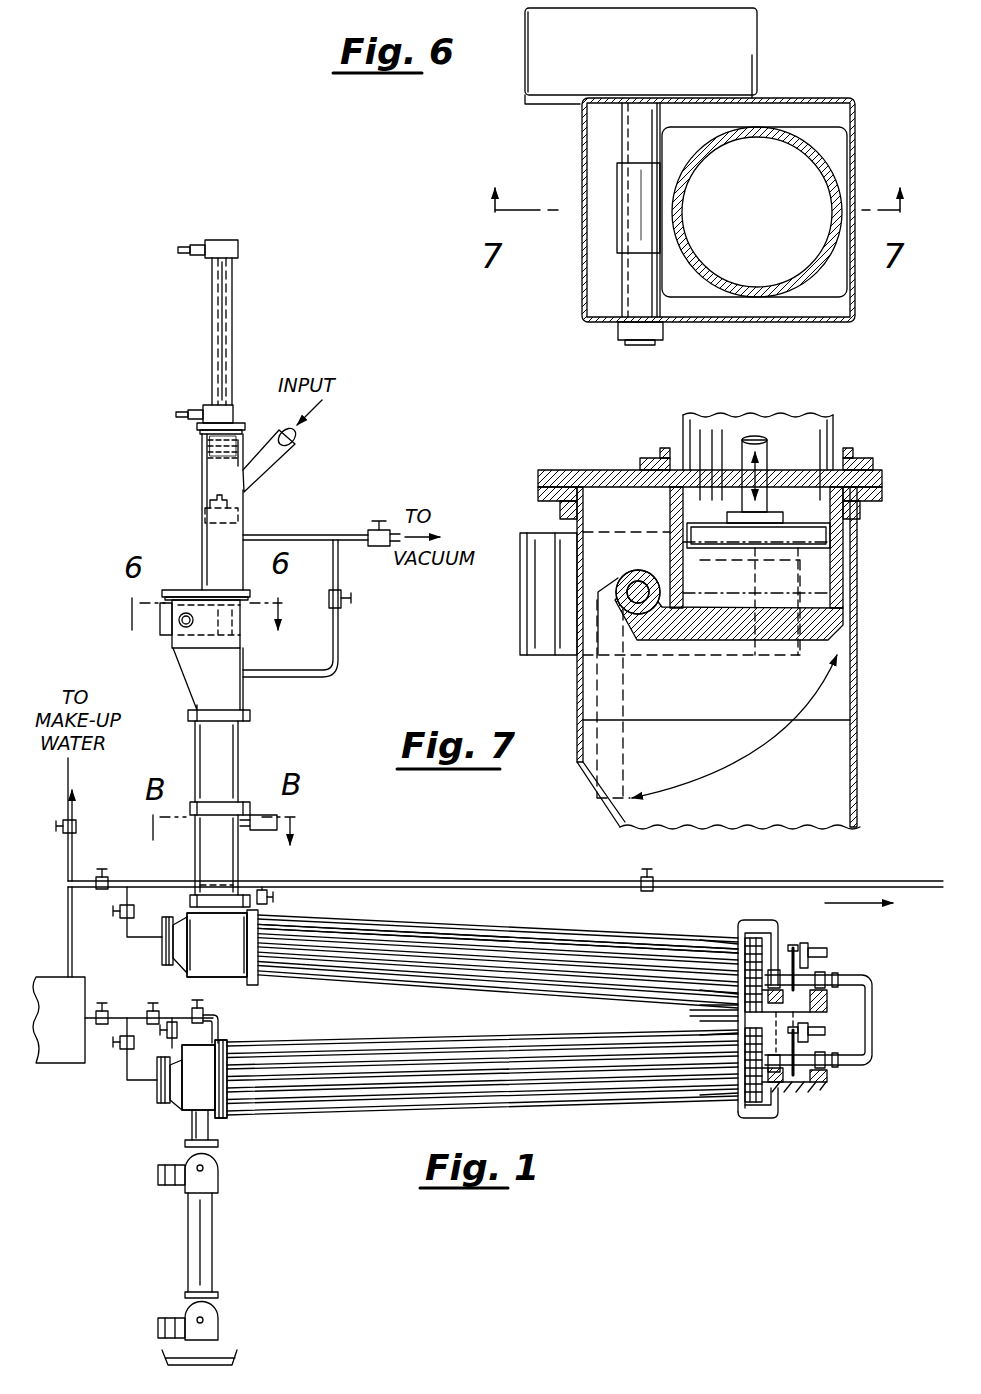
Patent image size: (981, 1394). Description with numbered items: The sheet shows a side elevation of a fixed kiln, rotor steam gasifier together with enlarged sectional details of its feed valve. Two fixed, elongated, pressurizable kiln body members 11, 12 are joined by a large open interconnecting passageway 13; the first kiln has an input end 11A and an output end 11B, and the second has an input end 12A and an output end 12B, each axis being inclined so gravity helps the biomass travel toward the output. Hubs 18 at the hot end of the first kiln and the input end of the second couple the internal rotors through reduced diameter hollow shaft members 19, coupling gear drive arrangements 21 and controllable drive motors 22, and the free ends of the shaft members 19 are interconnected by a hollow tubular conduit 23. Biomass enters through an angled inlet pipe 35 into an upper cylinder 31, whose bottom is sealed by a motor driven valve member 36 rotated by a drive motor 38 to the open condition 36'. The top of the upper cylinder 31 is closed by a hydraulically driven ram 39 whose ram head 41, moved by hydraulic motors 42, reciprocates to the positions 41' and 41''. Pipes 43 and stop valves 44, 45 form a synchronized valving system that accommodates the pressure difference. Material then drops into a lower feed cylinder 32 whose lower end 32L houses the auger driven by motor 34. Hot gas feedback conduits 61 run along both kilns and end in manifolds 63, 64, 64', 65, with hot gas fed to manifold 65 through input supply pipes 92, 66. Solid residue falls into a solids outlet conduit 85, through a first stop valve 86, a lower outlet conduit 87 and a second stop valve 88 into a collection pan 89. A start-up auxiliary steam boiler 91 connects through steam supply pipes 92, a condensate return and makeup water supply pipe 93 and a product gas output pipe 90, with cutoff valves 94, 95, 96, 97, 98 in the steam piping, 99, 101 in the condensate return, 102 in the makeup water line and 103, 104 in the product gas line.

In FIG. 1, the kiln body member 11 is at (590, 935).
In FIG. 1, the input end 11A is at (235, 980).
In FIG. 1, the output end 11B is at (716, 962).
In FIG. 1, the kiln body member 12 is at (567, 1106).
In FIG. 1, the input end 12A is at (700, 1060).
In FIG. 1, the output end 12B is at (160, 1106).
In FIG. 1, the interconnecting passageway 13 is at (690, 1013).
In FIG. 1, the hub 18 is at (760, 970).
In FIG. 1, the reduced diameter hollow shaft member 19 is at (826, 976).
In FIG. 1, the coupling gear drive arrangement 21 is at (793, 948).
In FIG. 1, the controllable drive motor 22 is at (806, 943).
In FIG. 1, the hollow tubular conduit 23 is at (872, 1040).
In FIG. 7, the upper cylinder 31 is at (690, 432).
In FIG. 1, the upper cylinder 31 is at (202, 485).
In FIG. 1, the lower feed cylinder 32 is at (198, 755).
In FIG. 1, the lower end of lower cylinder 32L is at (195, 870).
In FIG. 1, the motor 34 is at (265, 815).
In FIG. 1, the angled inlet pipe 35 is at (291, 447).
In FIG. 6, the motor driven valve member 36 is at (599, 224).
In FIG. 7, the motor driven valve member 36 is at (729, 631).
In FIG. 7, the open condition of valve member 36' is at (710, 665).
In FIG. 6, the drive motor 38 is at (530, 99).
In FIG. 7, the drive motor 38 is at (645, 536).
In FIG. 1, the drive motor 38 is at (193, 640).
In FIG. 1, the hydraulically driven ram 39 is at (212, 345).
In FIG. 1, the ram head 41 is at (193, 453).
In FIG. 1, the ram head lower position 41' is at (247, 508).
In FIG. 7, the ram head lowermost position 41'' is at (770, 481).
In FIG. 1, the hydraulic motor 42 is at (238, 248).
In FIG. 1, the pipe 43 is at (305, 535).
In FIG. 1, the stop valve 44 is at (385, 546).
In FIG. 1, the stop valve 45 is at (343, 605).
In FIG. 1, the hot gas feedback conduit 61 is at (345, 1048).
In FIG. 1, the manifold 63 is at (240, 965).
In FIG. 1, the manifold 64 is at (749, 1003).
In FIG. 1, the manifold 64' is at (771, 1125).
In FIG. 1, the manifold 65 is at (226, 1105).
In FIG. 1, the input supply pipe 66 is at (198, 1077).
In FIG. 1, the solids outlet conduit 85 is at (208, 1120).
In FIG. 1, the first stop valve 86 is at (216, 1165).
In FIG. 1, the lower outlet conduit 87 is at (202, 1242).
In FIG. 1, the second stop valve 88 is at (185, 1305).
In FIG. 1, the collection pan 89 is at (240, 1362).
In FIG. 1, the product gas output pipe 90 is at (472, 881).
In FIG. 1, the start-up auxiliary steam boiler 91 is at (46, 1063).
In FIG. 1, the steam supply pipe 92 is at (160, 945).
In FIG. 1, the condensate return and makeup water supply pipe 93 is at (67, 965).
In FIG. 1, the cutoff valve 94 is at (112, 1003).
In FIG. 1, the cutoff valve 95 is at (120, 1040).
In FIG. 1, the cutoff valve 96 is at (157, 1011).
In FIG. 1, the cutoff valve 97 is at (218, 1016).
In FIG. 1, the cutoff valve 98 is at (172, 1048).
In FIG. 1, the cutoff valve 99 is at (100, 877).
In FIG. 1, the cutoff valve 101 is at (120, 910).
In FIG. 1, the cutoff valve 102 is at (63, 822).
In FIG. 1, the cutoff valve 103 is at (267, 897).
In FIG. 1, the cutoff valve 104 is at (645, 877).